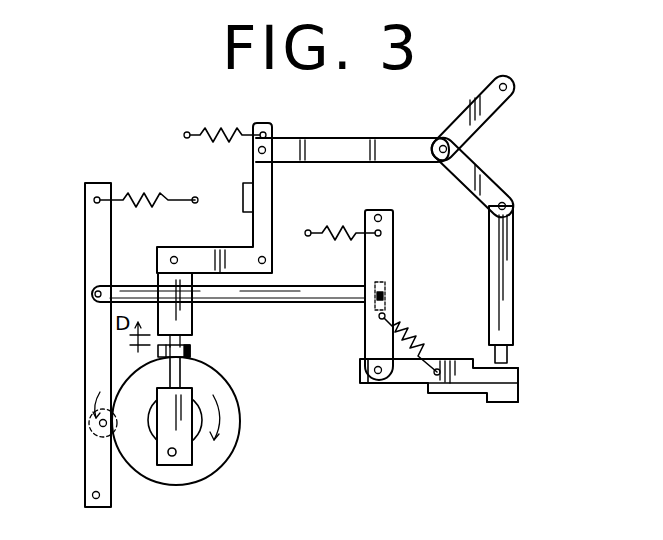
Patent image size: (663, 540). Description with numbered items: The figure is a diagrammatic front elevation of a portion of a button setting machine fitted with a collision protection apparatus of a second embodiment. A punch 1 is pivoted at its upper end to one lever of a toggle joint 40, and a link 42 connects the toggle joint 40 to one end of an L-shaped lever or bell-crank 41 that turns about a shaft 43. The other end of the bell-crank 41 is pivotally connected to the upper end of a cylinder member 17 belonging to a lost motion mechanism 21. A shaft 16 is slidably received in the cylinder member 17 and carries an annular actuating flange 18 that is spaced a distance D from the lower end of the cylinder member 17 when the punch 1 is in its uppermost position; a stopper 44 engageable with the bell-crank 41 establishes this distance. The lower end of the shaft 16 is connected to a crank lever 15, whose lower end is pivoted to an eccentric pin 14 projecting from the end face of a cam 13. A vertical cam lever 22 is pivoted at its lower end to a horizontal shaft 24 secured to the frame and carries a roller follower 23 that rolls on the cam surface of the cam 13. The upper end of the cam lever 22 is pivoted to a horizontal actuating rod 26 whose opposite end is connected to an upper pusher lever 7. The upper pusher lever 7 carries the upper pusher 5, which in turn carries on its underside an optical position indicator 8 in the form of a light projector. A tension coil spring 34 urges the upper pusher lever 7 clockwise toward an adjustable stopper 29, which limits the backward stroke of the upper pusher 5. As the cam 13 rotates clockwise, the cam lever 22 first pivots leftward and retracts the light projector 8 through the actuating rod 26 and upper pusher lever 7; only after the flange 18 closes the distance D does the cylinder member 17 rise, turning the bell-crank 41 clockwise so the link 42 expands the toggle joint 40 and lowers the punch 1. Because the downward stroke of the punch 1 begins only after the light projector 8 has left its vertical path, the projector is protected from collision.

The punch 1 is at (513, 288).
The upper pusher 5 is at (412, 380).
The upper pusher lever 7 is at (384, 250).
The optical position indicator 8 is at (500, 403).
The cam 13 is at (222, 448).
The eccentric pin 14 is at (175, 456).
The crank lever 15 is at (165, 440).
The shaft 16 is at (183, 375).
The cylinder member 17 is at (157, 277).
The annular flange 18 is at (192, 351).
The lost motion mechanism 21 is at (194, 315).
The cam lever 22 is at (90, 346).
The roller follower 23 is at (88, 423).
The horizontal shaft 24 is at (92, 492).
The actuating rod 26 is at (292, 303).
The stopper 29 is at (332, 338).
The tension coil spring 34 is at (348, 228).
The toggle joint 40 is at (470, 158).
The bell-crank 41 is at (270, 205).
The link 42 is at (408, 145).
The shaft 43 is at (266, 260).
The stopper 44 is at (243, 200).